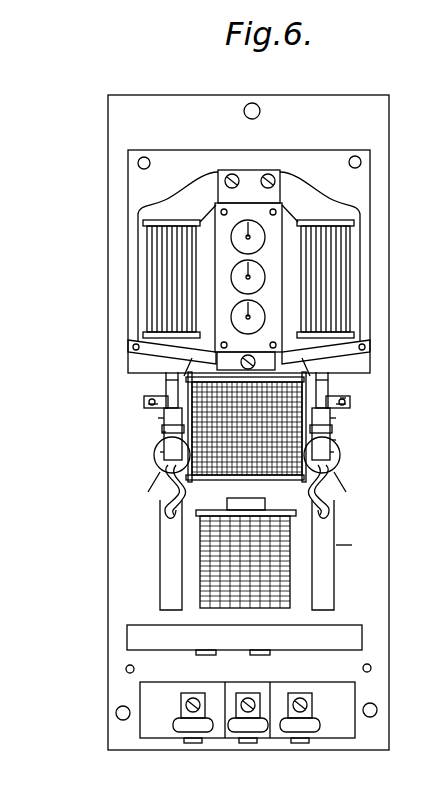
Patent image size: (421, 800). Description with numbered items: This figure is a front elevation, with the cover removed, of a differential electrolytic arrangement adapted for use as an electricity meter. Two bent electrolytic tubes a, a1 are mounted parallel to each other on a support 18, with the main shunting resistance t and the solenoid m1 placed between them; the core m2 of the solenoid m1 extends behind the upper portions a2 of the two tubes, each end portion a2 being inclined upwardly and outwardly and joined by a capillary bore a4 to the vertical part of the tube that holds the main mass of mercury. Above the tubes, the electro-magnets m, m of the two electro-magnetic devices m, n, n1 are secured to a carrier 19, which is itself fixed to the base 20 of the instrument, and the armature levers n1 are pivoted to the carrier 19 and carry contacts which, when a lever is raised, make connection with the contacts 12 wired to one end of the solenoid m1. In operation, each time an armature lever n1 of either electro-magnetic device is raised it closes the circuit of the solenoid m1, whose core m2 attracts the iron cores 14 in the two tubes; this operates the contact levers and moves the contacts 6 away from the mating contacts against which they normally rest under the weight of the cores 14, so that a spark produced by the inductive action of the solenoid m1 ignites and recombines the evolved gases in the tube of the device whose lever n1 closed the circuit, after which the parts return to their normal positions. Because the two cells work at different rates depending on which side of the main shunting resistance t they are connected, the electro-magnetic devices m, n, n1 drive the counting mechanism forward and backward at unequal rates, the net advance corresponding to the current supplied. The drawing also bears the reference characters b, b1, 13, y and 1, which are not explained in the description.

The base 20 is at (375, 148).
The carrier 19 is at (249, 261).
The contacts 12 is at (232, 278).
The electro-magnet m is at (248, 279).
The armature lever n1 is at (249, 357).
The contacts 6 is at (259, 367).
The solenoid m1 is at (246, 427).
The main shunting resistance t is at (246, 553).
The support 18 is at (244, 640).
The bent electrolytic tube a is at (162, 578).
The electro-magnetic device n is at (146, 380).
The armature b is at (158, 447).
The capillary bore a4 is at (162, 505).
The bent electrolytic tube a1 is at (353, 545).
The armature lever b1 is at (247, 494).
The end portion of tube a2 is at (148, 404).
The core of solenoid m2 is at (158, 418).
The contact 13 is at (162, 432).
The iron cores 14 is at (160, 455).
The lead wire y is at (346, 398).
The lever 1 is at (336, 440).